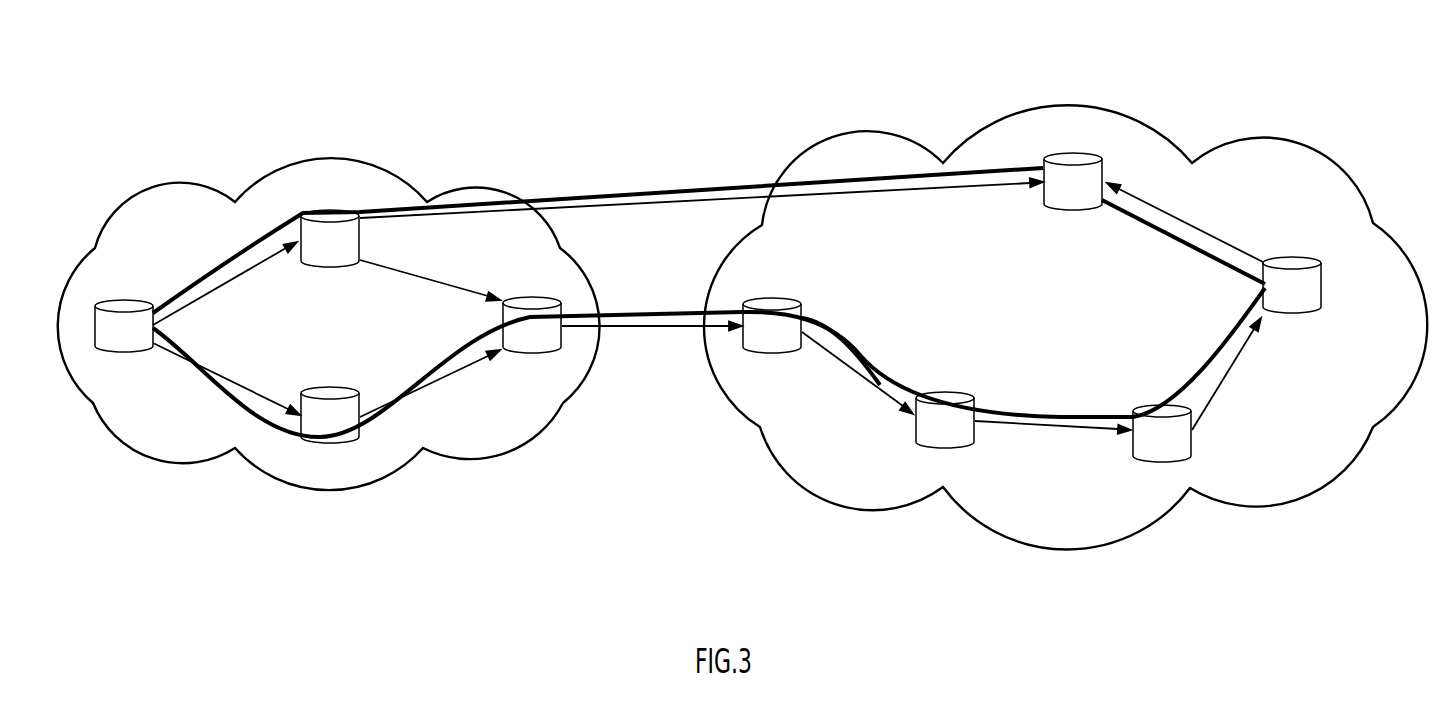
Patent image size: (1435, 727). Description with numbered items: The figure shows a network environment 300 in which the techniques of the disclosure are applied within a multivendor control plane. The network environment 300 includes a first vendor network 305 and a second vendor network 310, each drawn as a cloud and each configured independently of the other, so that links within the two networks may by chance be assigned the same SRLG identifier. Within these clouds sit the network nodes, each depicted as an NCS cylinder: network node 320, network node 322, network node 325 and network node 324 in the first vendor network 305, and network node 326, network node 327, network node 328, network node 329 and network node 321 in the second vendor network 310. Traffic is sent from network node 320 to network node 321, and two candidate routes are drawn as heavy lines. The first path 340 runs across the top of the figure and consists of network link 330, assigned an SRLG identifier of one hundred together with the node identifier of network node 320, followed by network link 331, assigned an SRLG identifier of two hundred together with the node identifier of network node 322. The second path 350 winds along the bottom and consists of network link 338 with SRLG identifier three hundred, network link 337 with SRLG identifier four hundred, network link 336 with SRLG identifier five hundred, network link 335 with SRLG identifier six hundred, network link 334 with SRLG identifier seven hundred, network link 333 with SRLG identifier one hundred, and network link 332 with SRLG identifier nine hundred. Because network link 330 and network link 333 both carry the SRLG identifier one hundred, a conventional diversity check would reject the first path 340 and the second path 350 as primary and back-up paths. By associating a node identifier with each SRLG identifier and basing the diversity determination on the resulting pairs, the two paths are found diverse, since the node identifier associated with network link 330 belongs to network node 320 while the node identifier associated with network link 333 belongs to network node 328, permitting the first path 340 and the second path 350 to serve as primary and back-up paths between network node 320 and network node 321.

The network environment 300 is at (243, 47).
The first vendor network 305 is at (132, 197).
The second vendor network 310 is at (1348, 177).
The network node 320 is at (127, 353).
The network node 321 is at (1072, 210).
The network node 322 is at (362, 238).
The network node 324 is at (328, 438).
The network node 325 is at (545, 353).
The network node 326 is at (773, 355).
The network node 327 is at (943, 450).
The network node 328 is at (1163, 462).
The network node 329 is at (1307, 313).
The network link 330 is at (272, 257).
The network link 331 is at (797, 197).
The network link 332 is at (1133, 198).
The network link 333 is at (1203, 421).
The network link 334 is at (1008, 428).
The network link 335 is at (883, 396).
The network link 336 is at (577, 327).
The network link 337 is at (472, 360).
The network link 338 is at (275, 395).
The first path 340 is at (700, 188).
The second path 350 is at (203, 377).